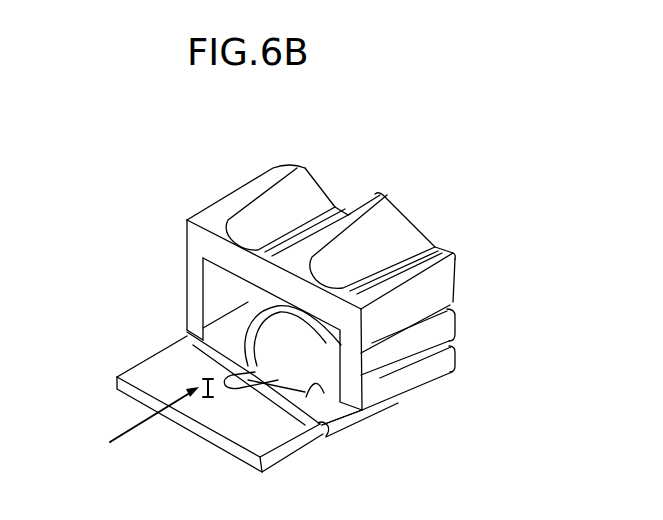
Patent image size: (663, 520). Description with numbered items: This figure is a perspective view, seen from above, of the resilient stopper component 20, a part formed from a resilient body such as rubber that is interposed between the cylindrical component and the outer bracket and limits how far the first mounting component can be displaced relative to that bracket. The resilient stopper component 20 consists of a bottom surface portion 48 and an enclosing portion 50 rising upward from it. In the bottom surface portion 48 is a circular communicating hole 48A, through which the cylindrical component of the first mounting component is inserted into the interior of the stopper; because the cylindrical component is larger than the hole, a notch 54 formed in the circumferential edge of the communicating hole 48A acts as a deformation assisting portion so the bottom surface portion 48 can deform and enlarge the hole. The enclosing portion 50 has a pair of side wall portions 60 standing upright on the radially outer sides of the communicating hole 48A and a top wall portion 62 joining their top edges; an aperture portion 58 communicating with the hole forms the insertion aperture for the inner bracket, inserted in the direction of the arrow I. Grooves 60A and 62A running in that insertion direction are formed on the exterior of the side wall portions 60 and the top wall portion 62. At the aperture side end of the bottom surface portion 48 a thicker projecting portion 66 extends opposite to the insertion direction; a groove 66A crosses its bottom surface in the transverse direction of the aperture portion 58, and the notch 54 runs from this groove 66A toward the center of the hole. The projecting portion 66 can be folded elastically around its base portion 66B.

The resilient stopper component 20 is at (499, 246).
The bottom surface portion 48 is at (426, 397).
The communicating hole 48A is at (323, 426).
The enclosing portion 50 is at (196, 212).
The notch 54 is at (266, 378).
The aperture portion 58 is at (220, 288).
The side wall portion 60 is at (183, 273).
The groove 60A is at (456, 328).
The top wall portion 62 is at (386, 205).
The groove 62A is at (313, 196).
The projecting portion 66 is at (151, 353).
The groove 66A is at (319, 430).
The base portion 66B is at (338, 431).